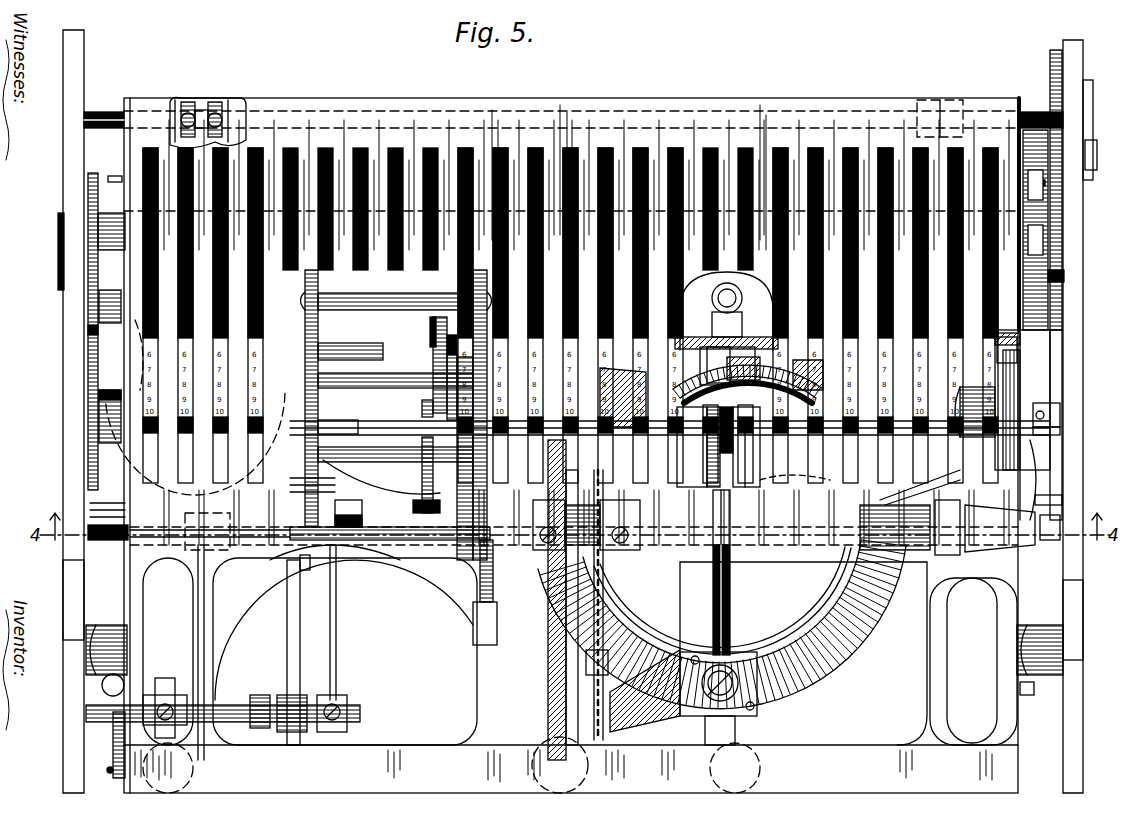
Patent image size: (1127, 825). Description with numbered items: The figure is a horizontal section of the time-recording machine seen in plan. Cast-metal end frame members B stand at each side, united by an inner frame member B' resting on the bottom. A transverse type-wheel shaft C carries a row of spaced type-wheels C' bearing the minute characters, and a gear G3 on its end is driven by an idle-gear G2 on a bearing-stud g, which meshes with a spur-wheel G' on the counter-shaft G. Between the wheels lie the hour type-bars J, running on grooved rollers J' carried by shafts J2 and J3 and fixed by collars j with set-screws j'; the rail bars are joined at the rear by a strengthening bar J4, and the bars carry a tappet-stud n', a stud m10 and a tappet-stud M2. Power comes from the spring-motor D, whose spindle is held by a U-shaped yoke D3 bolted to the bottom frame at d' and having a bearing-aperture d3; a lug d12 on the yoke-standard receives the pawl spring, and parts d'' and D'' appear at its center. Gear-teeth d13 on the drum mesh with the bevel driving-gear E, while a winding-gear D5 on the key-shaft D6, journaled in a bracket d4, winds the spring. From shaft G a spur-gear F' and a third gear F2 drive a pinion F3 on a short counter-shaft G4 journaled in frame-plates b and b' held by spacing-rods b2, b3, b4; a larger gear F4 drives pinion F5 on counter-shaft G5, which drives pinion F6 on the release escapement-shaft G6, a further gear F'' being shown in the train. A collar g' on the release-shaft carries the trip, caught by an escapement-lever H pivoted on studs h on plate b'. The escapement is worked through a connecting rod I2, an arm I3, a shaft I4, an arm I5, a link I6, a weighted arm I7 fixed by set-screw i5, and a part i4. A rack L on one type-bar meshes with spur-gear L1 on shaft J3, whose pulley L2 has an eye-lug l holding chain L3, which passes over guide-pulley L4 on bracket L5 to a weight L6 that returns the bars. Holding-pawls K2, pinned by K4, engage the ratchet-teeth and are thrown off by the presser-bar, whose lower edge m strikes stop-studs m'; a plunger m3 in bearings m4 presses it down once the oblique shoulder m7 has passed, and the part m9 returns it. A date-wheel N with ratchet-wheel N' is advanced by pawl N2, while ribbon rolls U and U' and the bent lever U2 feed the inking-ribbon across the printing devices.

The end frame member B is at (573, 397).
The inner frame member B' is at (572, 610).
The roller supporting-shaft J2 is at (1027, 112).
The strengthening bar J4 is at (571, 765).
The roller supporting-shaft J3 is at (95, 525).
The type-wheels C' is at (576, 307).
The type-bars J is at (649, 161).
The rollers J' is at (579, 332).
The collars j is at (636, 347).
The set-screws j' is at (201, 103).
The tappet-stud n' is at (598, 172).
The gear G3 is at (92, 198).
The idle-roll U is at (73, 231).
The type-wheel shaft C is at (41, 254).
The bearing-stud g is at (65, 329).
The idle-gear G2 is at (95, 345).
The counter-shaft G is at (543, 430).
The spur-wheel G' is at (161, 407).
The spacing-rod b3 is at (345, 300).
The spacing-rod b4 is at (340, 352).
The counter-shaft G4 is at (403, 378).
The spur-gear F2 is at (440, 352).
The gear column F'' is at (460, 439).
The gear F4 is at (433, 320).
The pinion F3 is at (452, 340).
The counter-shaft G5 is at (343, 453).
The pinion F6 is at (380, 462).
The pinion F5 is at (425, 470).
The collar g' is at (326, 502).
The escapement-lever H is at (330, 520).
The pivot-studs h is at (306, 562).
The release escapement-shaft G6 is at (345, 557).
The spur-gear F' is at (456, 583).
The bevel driving-gear E is at (492, 580).
The link I6 is at (344, 630).
The frame-plate b' is at (345, 651).
The spacing-rod b2 is at (383, 680).
The frame-plate b is at (402, 622).
The shaft I4 is at (232, 705).
The set-screw i5 is at (172, 690).
The arm I5 is at (340, 725).
The weighted arm I7 is at (201, 740).
The arm I3 is at (175, 770).
The connecting rod I2 is at (110, 770).
The roller i4 is at (300, 735).
The tappet-stud M2 is at (1028, 695).
The rack L is at (566, 680).
The chain L3 is at (560, 650).
The guide-pulley L4 is at (596, 700).
The weight L6 is at (585, 730).
The spur-gear L1 is at (536, 508).
The grooved pulley L2 is at (640, 508).
The bracket L5 is at (645, 708).
The bolting point d' is at (726, 300).
The lug d12 is at (700, 366).
The slide d'' is at (698, 447).
The slide D'' is at (740, 447).
The eye-lug l is at (705, 560).
The yoke D3 is at (719, 645).
The gear-teeth d13 is at (850, 645).
The spring-motor D is at (760, 646).
The winding-gear D5 is at (905, 600).
The bracket d4 is at (997, 527).
The key-shaft D6 is at (1000, 560).
The bearing-aperture d3 is at (795, 500).
The holding-pawl K2 is at (990, 465).
The through-pin K4 is at (1000, 392).
The lower edge of presser-bar m is at (1055, 404).
The plunger m3 is at (1050, 415).
The bearings m4 is at (1050, 432).
The projecting part of presser-bar m9 is at (1040, 355).
The stud m10 is at (1050, 345).
The stop-stud m' is at (1069, 425).
The oblique shoulder m7 is at (1062, 500).
The date-wheel N is at (1080, 413).
The actuating-pawl N2 is at (1052, 60).
The ratchet-wheel N' is at (1082, 274).
The winding-drum roll U' is at (1070, 230).
The L-shaped lever U2 is at (1090, 130).